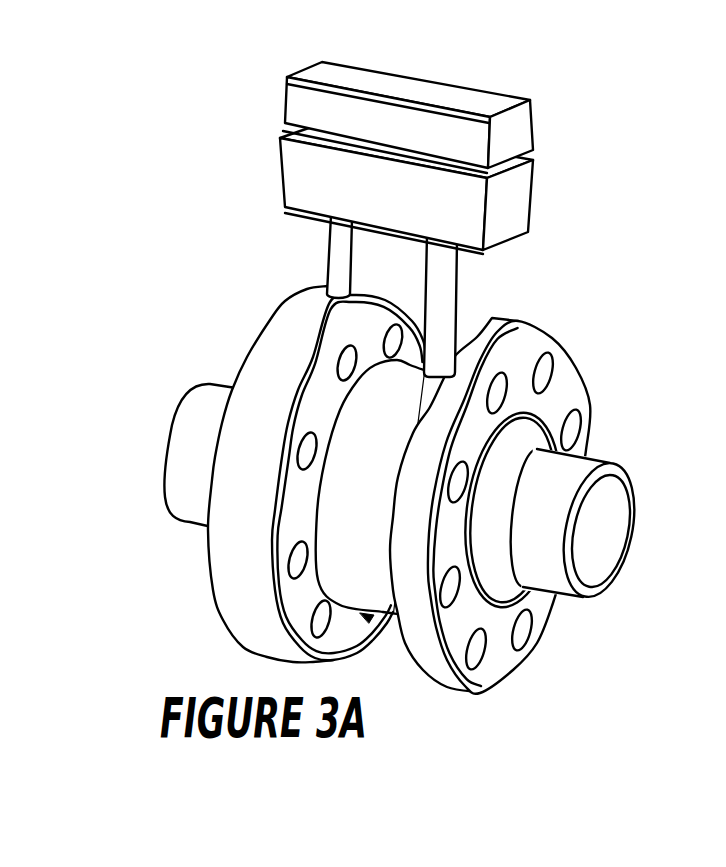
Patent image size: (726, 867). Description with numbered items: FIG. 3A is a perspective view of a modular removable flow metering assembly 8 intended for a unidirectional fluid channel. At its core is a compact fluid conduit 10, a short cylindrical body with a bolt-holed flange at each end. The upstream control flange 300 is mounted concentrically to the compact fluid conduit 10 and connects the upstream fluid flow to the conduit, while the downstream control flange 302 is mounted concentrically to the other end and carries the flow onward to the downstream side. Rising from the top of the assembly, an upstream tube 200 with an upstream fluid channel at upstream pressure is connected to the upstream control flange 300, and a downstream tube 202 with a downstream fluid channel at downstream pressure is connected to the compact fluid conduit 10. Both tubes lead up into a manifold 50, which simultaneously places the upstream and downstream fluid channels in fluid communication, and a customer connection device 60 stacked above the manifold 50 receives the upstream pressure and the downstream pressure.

The modular removable flow metering assembly 8 is at (668, 108).
The compact fluid conduit 10 is at (338, 552).
The manifold 50 is at (503, 197).
The customer connection device 60 is at (517, 137).
The upstream tube 200 is at (340, 252).
The downstream tube 202 is at (427, 276).
The upstream control flange 300 is at (304, 303).
The downstream control flange 302 is at (493, 333).